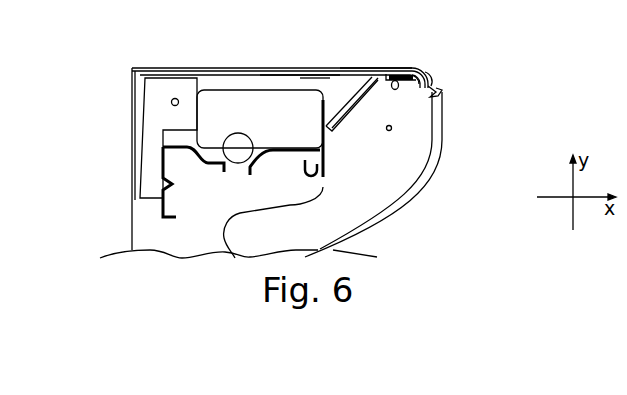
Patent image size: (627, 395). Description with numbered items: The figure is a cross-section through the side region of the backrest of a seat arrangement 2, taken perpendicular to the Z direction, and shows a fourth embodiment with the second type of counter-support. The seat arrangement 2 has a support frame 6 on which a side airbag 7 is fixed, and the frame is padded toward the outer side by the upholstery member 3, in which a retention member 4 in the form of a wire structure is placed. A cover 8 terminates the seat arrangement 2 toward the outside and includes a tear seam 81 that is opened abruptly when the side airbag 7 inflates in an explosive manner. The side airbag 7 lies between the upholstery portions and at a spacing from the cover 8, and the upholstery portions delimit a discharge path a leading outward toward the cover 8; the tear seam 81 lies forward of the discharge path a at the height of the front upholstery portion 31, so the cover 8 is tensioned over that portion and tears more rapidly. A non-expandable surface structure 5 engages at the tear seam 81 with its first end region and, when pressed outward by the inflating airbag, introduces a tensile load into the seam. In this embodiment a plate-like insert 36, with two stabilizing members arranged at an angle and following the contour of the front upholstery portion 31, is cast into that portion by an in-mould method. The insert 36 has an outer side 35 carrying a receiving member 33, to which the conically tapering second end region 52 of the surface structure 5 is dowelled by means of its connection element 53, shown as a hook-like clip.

The seat arrangement 2 is at (141, 63).
The upholstery member 3 is at (195, 66).
The retention member 4 is at (382, 66).
The non-expandable surface structure 5 is at (301, 78).
The support frame 6 is at (162, 208).
The side airbag 7 is at (228, 88).
The cover 8 is at (443, 144).
The front upholstery portion 31 is at (387, 215).
The receiving member 33 is at (419, 77).
The outer side 35 is at (431, 78).
The plate-like insert 36 is at (352, 98).
The second end region 52 is at (393, 72).
The connection element 53 is at (394, 76).
The tear seam 81 is at (441, 91).
The discharge path a is at (314, 88).